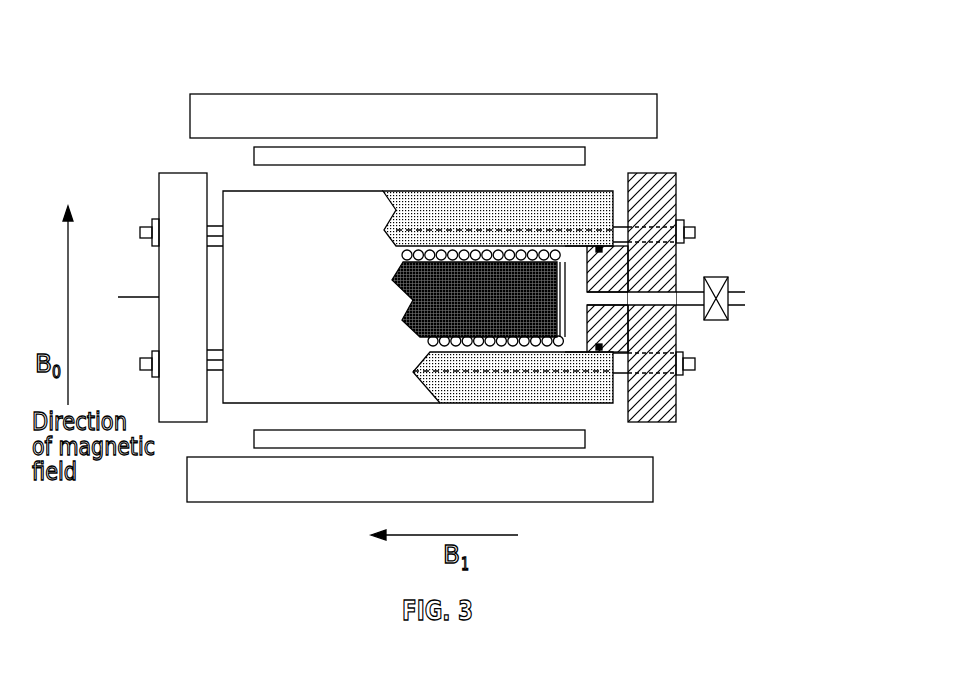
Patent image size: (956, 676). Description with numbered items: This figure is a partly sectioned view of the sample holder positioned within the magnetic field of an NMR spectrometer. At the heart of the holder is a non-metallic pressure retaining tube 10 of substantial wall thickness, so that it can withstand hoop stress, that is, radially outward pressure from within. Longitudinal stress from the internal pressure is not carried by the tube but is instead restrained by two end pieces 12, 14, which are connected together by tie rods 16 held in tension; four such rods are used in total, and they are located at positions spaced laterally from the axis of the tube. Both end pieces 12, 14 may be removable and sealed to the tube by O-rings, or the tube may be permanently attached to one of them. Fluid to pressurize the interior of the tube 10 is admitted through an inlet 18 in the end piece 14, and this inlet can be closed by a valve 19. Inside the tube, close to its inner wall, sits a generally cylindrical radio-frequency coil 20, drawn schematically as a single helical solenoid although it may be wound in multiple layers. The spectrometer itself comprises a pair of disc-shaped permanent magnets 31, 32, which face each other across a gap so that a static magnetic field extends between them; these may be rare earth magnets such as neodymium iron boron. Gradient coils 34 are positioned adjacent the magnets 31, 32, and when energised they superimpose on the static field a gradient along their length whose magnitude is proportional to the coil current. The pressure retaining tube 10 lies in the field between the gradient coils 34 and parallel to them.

The pressure retaining tube 10 is at (541, 206).
The end piece 12 is at (177, 200).
The end piece 14 is at (670, 198).
The tie rods 16 is at (212, 223).
The inlet 18 is at (740, 306).
The valve 19 is at (717, 277).
The radio-frequency coil 20 is at (463, 248).
The permanent magnet 31 is at (638, 473).
The permanent magnet 32 is at (645, 122).
The gradient coils 34 is at (436, 155).